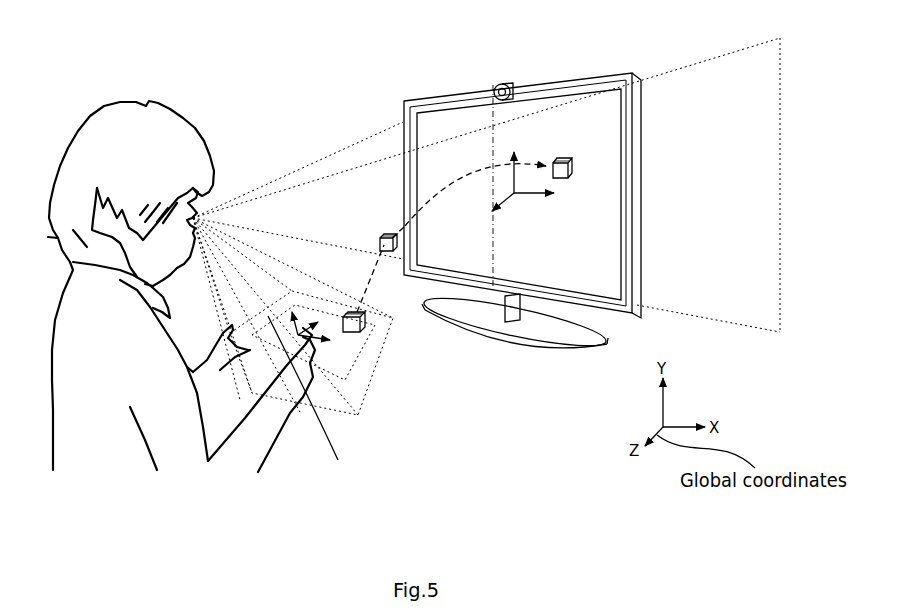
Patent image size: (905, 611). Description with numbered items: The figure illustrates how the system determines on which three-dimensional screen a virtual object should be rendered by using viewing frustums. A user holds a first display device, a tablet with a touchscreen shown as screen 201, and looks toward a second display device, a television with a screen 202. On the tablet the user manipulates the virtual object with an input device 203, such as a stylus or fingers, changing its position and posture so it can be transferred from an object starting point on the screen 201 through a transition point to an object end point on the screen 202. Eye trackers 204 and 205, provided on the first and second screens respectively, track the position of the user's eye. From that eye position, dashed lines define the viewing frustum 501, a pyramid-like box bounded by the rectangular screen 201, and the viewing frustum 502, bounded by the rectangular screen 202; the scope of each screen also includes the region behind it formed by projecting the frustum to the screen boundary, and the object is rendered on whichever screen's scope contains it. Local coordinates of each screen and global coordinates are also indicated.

The 3D screen 201 is at (305, 338).
The 3D screen 202 is at (600, 110).
The input device 203 is at (298, 345).
The eye tracker 204 is at (362, 313).
The eye tracker 205 is at (513, 88).
The viewing frustum 501 is at (311, 400).
The viewing frustum 502 is at (345, 148).